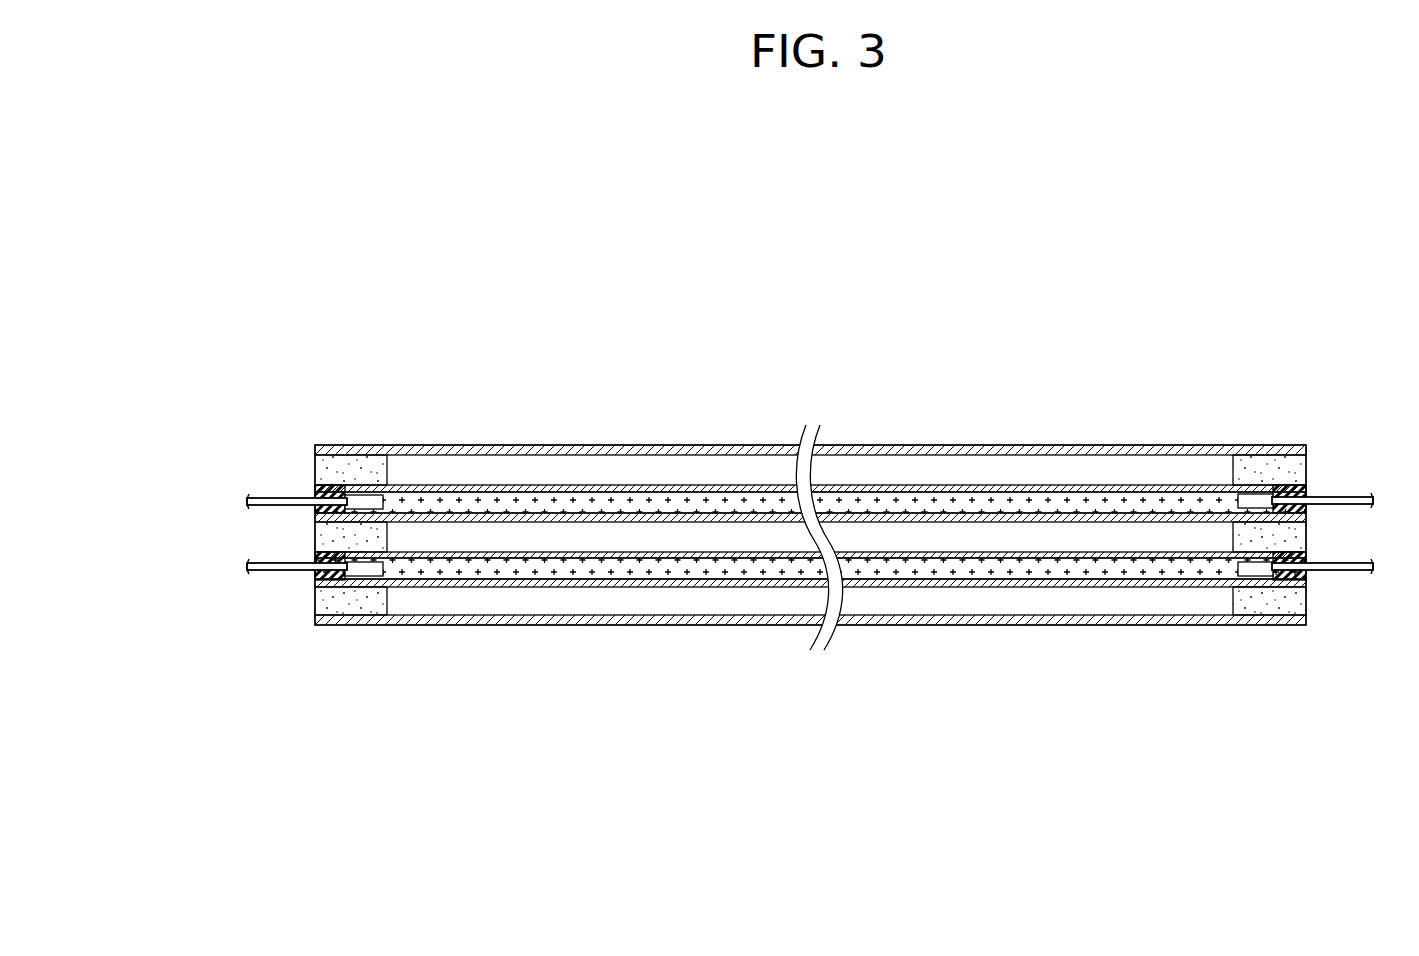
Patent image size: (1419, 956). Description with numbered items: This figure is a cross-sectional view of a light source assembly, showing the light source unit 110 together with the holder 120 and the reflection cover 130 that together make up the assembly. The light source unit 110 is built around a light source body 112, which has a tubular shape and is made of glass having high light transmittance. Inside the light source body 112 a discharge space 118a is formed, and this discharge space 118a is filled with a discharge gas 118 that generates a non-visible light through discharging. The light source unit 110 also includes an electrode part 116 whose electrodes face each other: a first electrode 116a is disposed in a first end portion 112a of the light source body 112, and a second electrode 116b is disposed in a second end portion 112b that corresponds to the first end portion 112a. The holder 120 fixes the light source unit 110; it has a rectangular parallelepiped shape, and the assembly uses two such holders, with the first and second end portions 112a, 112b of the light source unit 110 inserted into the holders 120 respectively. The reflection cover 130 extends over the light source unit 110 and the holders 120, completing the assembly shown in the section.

The light source unit 110 is at (608, 637).
The light source body 112 is at (723, 487).
The first end portion 112a is at (313, 483).
The second end portion 112b is at (1307, 487).
The electrode part 116 is at (193, 372).
The first electrode 116a is at (263, 500).
The second electrode 116b is at (1358, 497).
The discharge gas 118 is at (590, 500).
The discharge space 118a is at (970, 570).
The holder 120 is at (320, 602).
The reflection cover 130 is at (1023, 442).